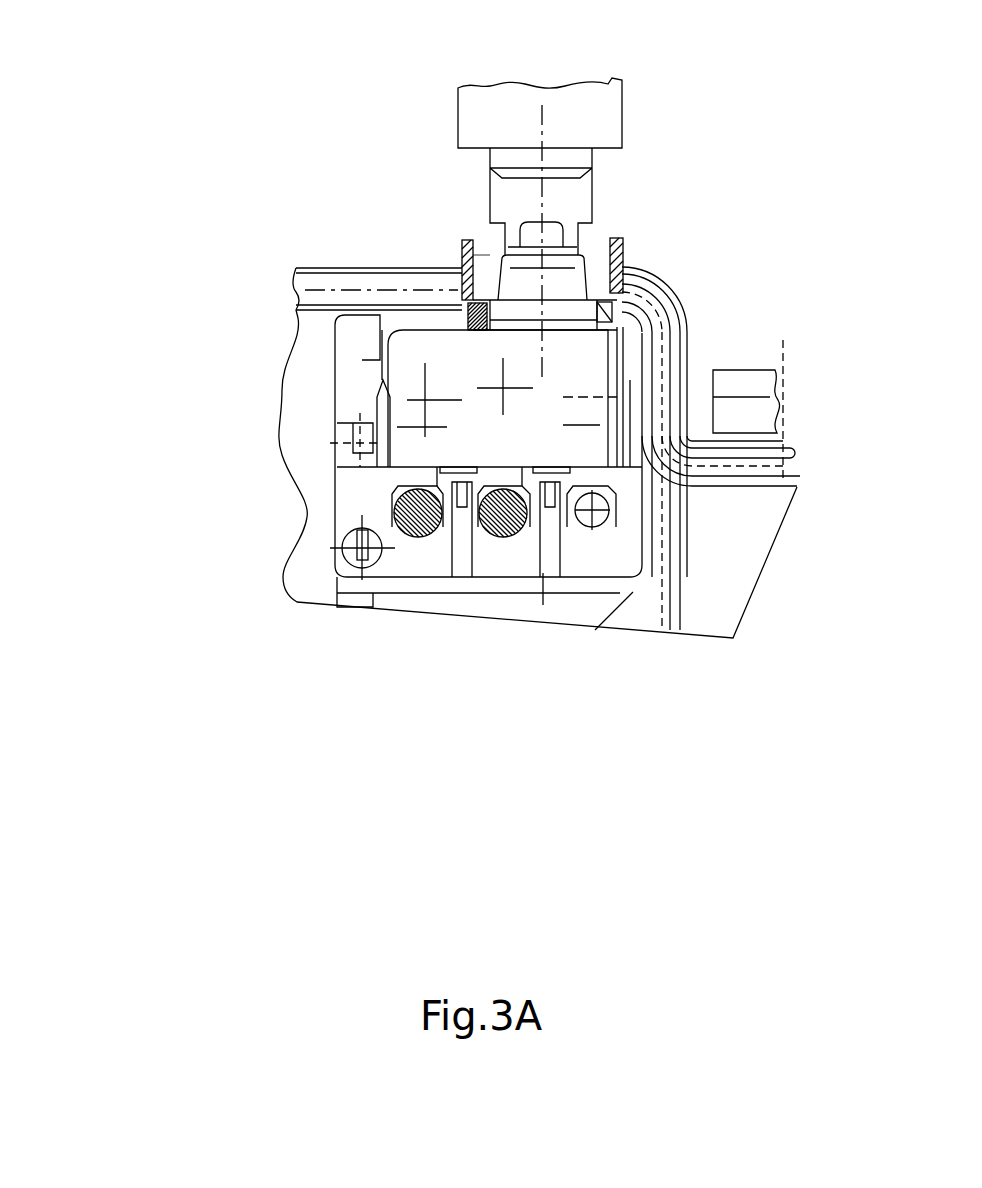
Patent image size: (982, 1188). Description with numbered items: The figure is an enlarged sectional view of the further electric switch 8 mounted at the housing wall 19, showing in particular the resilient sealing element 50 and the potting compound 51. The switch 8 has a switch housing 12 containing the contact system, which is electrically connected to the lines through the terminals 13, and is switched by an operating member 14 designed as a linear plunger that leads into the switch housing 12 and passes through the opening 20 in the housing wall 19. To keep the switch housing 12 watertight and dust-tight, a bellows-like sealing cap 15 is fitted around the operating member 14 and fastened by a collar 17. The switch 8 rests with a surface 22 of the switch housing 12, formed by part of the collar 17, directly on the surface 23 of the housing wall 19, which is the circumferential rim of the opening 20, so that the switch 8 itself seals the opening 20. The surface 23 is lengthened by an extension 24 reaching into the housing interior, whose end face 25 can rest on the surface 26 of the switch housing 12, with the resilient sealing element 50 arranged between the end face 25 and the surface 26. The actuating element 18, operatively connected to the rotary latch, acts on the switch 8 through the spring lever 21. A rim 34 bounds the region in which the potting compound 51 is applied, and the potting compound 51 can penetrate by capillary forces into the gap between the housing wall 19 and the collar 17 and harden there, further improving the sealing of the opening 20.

The further electric switch 8 is at (418, 433).
The switch housing 12 is at (445, 333).
The terminals 13 is at (592, 345).
The operating member 14 is at (543, 233).
The sealing cap 15 is at (568, 273).
The collar 17 is at (657, 273).
The actuating element 18 is at (605, 108).
The housing wall 19 is at (398, 292).
The opening 20 is at (483, 253).
The spring lever 21 is at (517, 160).
The surface of the switch housing 22 is at (478, 317).
The surface of the housing wall 23 is at (503, 313).
The extension 24 is at (605, 315).
The end face 25 is at (592, 512).
The surface of the switch housing 26 is at (438, 318).
The rim 34 is at (418, 585).
The resilient sealing element 50 is at (630, 320).
The potting compound 51 is at (373, 492).